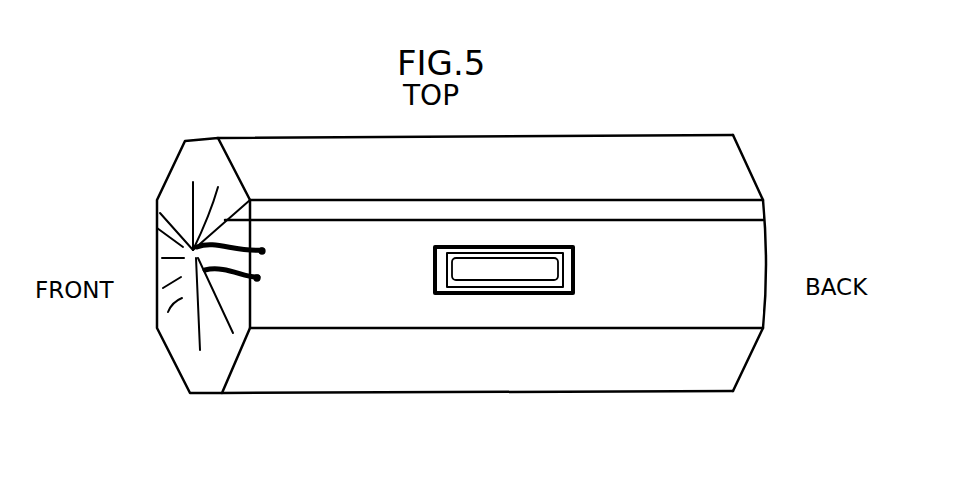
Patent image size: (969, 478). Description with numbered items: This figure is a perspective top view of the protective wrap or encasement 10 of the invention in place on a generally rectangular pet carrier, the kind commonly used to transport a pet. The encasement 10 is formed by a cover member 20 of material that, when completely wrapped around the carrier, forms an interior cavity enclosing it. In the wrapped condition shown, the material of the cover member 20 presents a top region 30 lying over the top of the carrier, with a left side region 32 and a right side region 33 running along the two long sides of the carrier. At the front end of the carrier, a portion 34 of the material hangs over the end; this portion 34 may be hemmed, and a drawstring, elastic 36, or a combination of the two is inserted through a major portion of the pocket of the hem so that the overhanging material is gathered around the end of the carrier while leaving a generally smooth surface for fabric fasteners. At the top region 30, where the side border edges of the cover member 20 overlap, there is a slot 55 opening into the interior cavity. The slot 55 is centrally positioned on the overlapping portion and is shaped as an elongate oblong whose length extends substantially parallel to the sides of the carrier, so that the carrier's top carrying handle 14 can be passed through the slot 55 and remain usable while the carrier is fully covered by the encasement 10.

The protective wrap or encasement 10 is at (327, 117).
The cover member 20 is at (577, 147).
The left side region 32 is at (490, 167).
The right side region 33 is at (477, 368).
The top region 30 is at (494, 274).
The portion hanging over front end 34 is at (203, 265).
The drawstring, elastic 36 is at (265, 250).
The handle 14 is at (498, 268).
The slot 55 is at (571, 248).